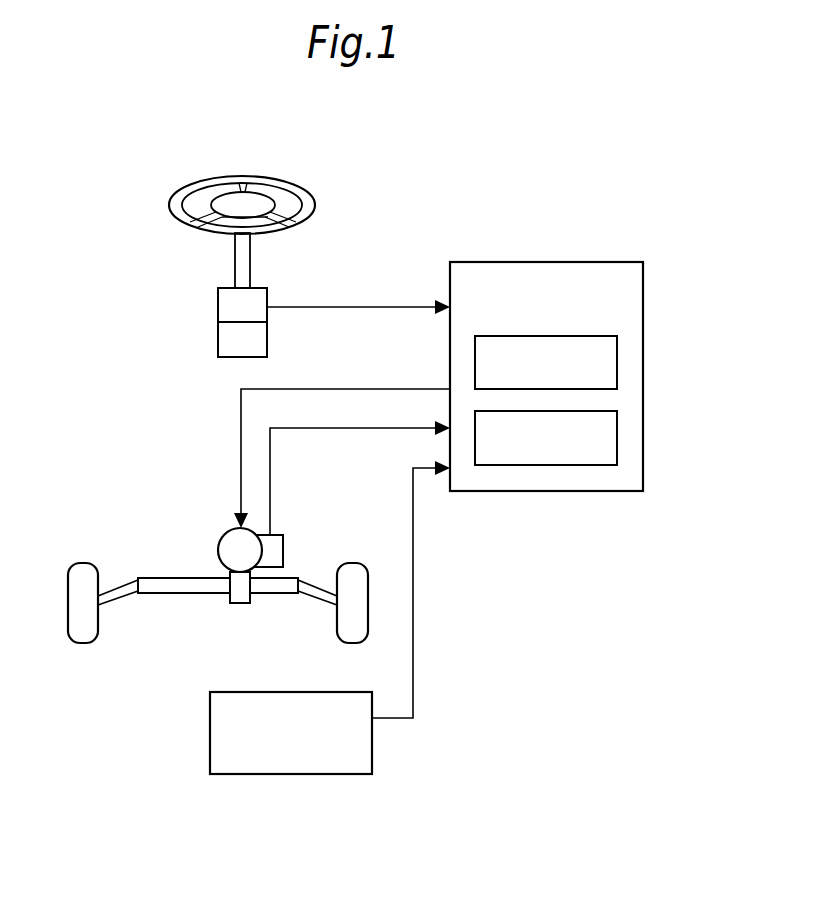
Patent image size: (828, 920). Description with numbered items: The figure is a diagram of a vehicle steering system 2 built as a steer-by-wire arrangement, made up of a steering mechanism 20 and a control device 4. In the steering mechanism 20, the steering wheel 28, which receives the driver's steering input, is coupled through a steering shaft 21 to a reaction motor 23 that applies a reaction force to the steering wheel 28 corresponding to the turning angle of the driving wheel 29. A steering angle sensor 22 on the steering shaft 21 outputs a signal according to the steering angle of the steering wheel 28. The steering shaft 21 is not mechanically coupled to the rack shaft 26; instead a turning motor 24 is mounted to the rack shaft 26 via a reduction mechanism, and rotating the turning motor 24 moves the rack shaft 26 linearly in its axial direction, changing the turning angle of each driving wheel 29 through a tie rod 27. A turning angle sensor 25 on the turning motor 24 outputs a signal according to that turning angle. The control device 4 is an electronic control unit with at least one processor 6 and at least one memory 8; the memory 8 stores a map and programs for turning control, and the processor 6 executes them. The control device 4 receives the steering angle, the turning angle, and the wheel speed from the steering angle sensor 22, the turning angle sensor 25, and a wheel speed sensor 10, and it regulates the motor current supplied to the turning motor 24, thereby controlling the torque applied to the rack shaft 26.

The vehicle steering system 2 is at (431, 203).
The control device 4 is at (565, 262).
The processor 6 is at (617, 363).
The memory 8 is at (617, 440).
The wheel speed sensor 10 is at (210, 718).
The steering mechanism 20 is at (105, 300).
The steering shaft 21 is at (235, 256).
The steering angle sensor 22 is at (218, 300).
The reaction motor 23 is at (218, 334).
The turning motor 24 is at (225, 535).
The turning angle sensor 25 is at (278, 535).
The rack shaft 26 is at (152, 578).
The tie rod 27 is at (125, 600).
The steering wheel 28 is at (226, 178).
The driving wheel 29 is at (82, 563).